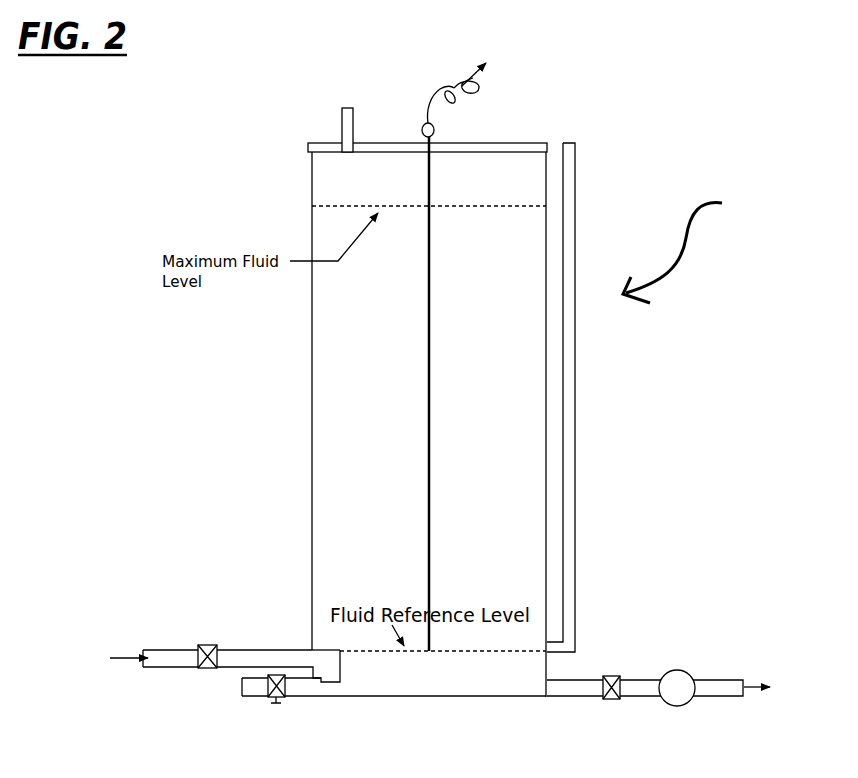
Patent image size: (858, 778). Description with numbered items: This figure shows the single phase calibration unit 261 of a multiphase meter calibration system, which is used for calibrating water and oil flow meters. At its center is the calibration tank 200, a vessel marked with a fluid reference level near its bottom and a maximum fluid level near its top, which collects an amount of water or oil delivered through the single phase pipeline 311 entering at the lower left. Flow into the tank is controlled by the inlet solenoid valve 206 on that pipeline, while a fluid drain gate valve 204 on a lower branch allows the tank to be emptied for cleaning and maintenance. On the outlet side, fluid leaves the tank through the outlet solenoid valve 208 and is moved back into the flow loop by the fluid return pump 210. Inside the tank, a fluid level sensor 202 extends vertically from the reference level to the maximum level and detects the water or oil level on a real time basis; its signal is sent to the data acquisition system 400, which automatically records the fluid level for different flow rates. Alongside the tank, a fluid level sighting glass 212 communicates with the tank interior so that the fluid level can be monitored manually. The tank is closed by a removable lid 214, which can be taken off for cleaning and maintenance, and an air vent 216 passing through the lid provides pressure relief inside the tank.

The calibration tank 200 is at (378, 342).
The fluid level sensor 202 is at (423, 432).
The fluid drain gate valve 204 is at (265, 711).
The inlet solenoid valve 206 is at (203, 634).
The outlet solenoid valve 208 is at (614, 669).
The fluid return pump 210 is at (669, 711).
The fluid level sighting glass 212 is at (579, 382).
The removable lid 214 is at (490, 140).
The air vent 216 is at (335, 125).
The single phase calibration unit 261 is at (694, 249).
The single phase pipeline 311 is at (268, 634).
The data acquisition system 400 is at (577, 76).